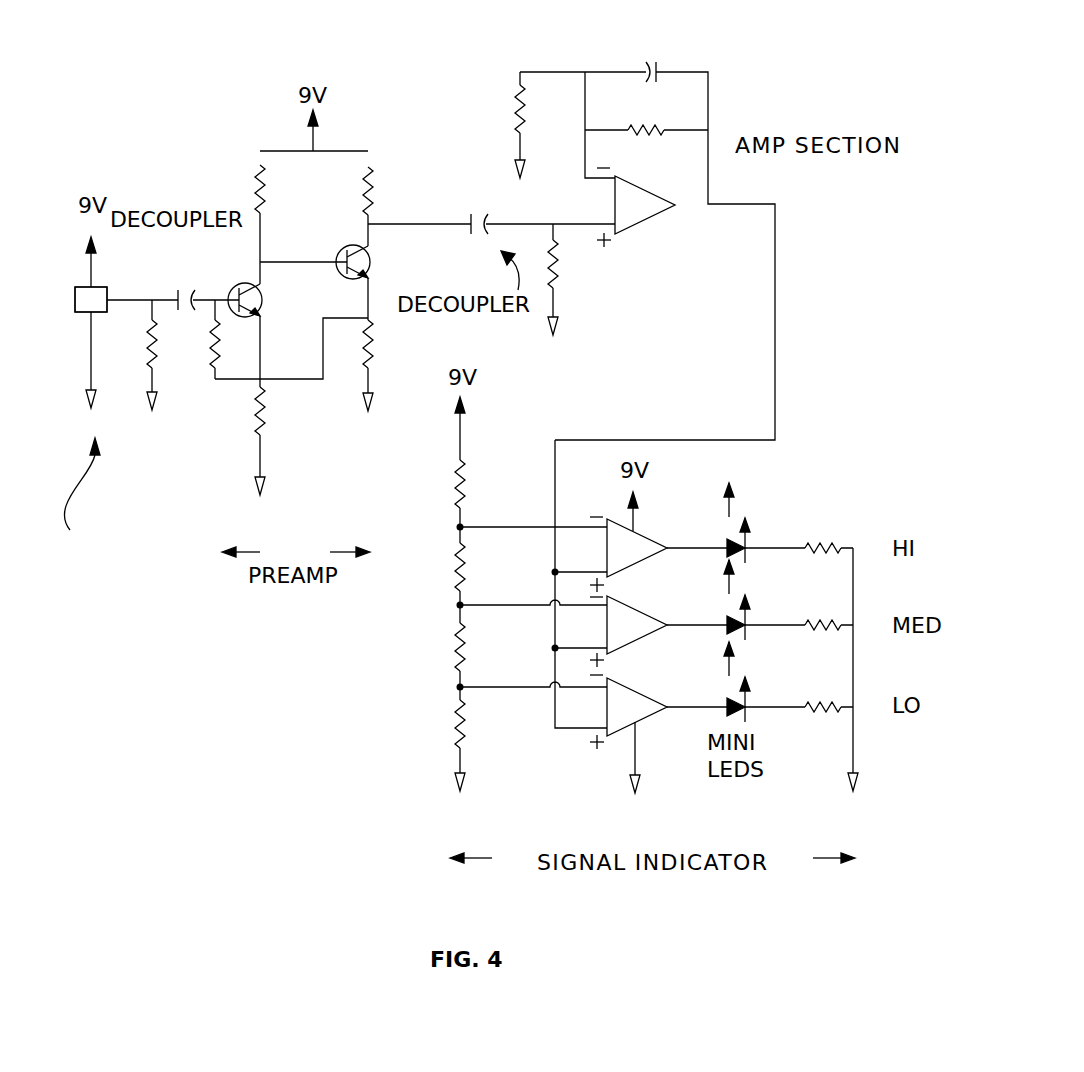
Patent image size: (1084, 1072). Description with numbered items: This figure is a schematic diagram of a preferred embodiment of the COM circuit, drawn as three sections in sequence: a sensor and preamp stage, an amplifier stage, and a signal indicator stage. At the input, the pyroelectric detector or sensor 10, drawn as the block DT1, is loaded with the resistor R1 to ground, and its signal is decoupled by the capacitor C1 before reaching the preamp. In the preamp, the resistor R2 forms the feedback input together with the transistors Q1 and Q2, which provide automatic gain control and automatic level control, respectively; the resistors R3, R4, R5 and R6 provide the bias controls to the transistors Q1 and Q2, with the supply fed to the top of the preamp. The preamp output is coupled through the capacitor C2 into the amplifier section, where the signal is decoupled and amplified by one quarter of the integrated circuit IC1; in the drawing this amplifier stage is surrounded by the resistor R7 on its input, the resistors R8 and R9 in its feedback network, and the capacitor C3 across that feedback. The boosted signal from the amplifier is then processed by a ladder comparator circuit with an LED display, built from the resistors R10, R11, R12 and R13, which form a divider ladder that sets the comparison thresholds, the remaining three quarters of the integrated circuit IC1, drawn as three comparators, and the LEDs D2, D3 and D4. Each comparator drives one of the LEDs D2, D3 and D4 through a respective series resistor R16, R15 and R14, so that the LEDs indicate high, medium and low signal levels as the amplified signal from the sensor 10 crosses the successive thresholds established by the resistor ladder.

The pyroelectric detector or sensor 10 is at (128, 421).
The detector / sensor element DT1 is at (112, 286).
The resistor R1 is at (128, 346).
The resistor R2 is at (191, 355).
The resistor R3 is at (261, 411).
The resistor R4 is at (388, 343).
The resistor R5 is at (291, 192).
The resistor R6 is at (397, 193).
The resistor 51k R7 is at (579, 275).
The resistor 10k R8 is at (544, 113).
The resistor 1M R9 is at (647, 131).
The resistor R10 is at (458, 724).
The resistor R11 is at (458, 646).
The resistor R12 is at (458, 568).
The resistor R13 is at (463, 484).
The resistor R14 is at (817, 707).
The resistor R15 is at (817, 631).
The resistor R16 is at (818, 551).
The capacitor C1 is at (188, 273).
The capacitor 4.7uF C2 is at (498, 215).
The capacitor .01uF C3 is at (656, 45).
The transistor Q1 is at (292, 309).
The transistor Q2 is at (386, 249).
The integrated circuit IC1 is at (658, 458).
The LED D2 is at (748, 539).
The LED D3 is at (748, 618).
The LED D4 is at (758, 684).